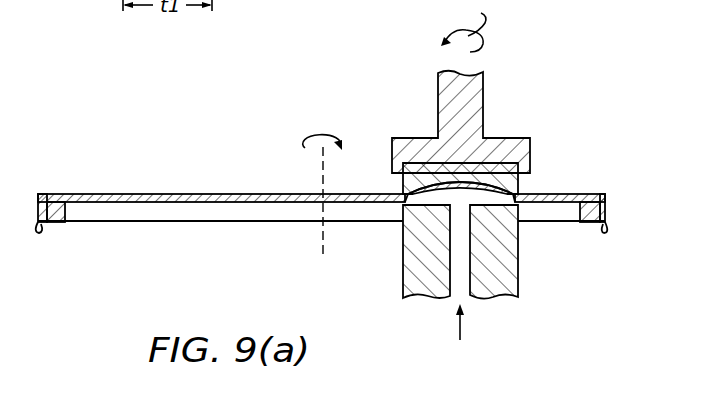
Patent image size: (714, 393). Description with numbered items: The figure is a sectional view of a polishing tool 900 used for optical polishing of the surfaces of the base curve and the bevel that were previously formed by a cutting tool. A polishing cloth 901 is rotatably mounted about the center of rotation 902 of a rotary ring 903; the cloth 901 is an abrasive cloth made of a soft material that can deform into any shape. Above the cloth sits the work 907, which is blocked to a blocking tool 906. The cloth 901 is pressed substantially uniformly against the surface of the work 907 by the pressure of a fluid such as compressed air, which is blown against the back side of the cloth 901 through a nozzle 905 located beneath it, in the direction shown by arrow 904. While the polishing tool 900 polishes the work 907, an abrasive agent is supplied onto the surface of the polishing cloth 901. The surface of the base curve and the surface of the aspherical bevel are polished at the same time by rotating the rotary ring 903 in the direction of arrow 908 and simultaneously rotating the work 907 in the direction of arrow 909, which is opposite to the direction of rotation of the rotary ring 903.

The polishing tool 900 is at (556, 73).
The polishing cloth 901 is at (137, 194).
The center of rotation 902 is at (323, 247).
The rotary ring 903 is at (58, 205).
The arrow 904 is at (460, 327).
The nozzle 905 is at (502, 270).
The blocking tool 906 is at (476, 100).
The work 907 is at (505, 182).
The arrow 908 is at (318, 130).
The arrow 909 is at (466, 26).